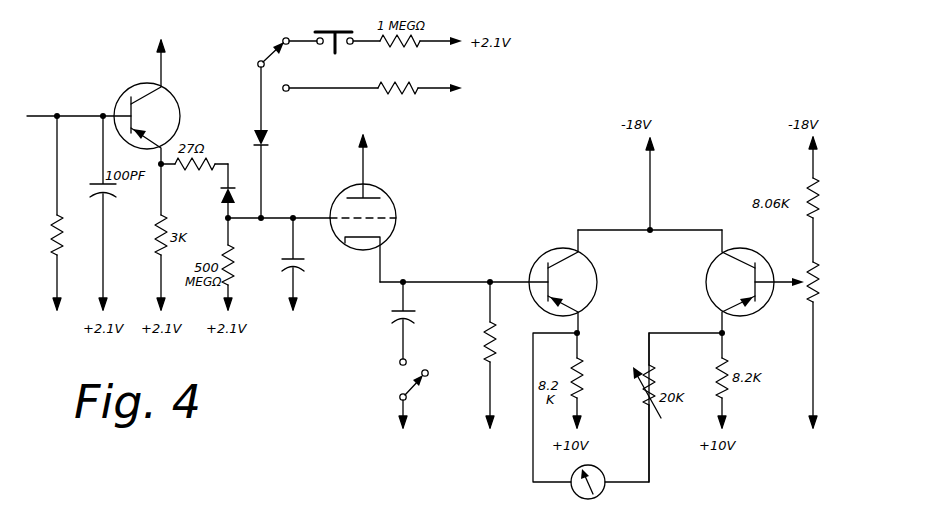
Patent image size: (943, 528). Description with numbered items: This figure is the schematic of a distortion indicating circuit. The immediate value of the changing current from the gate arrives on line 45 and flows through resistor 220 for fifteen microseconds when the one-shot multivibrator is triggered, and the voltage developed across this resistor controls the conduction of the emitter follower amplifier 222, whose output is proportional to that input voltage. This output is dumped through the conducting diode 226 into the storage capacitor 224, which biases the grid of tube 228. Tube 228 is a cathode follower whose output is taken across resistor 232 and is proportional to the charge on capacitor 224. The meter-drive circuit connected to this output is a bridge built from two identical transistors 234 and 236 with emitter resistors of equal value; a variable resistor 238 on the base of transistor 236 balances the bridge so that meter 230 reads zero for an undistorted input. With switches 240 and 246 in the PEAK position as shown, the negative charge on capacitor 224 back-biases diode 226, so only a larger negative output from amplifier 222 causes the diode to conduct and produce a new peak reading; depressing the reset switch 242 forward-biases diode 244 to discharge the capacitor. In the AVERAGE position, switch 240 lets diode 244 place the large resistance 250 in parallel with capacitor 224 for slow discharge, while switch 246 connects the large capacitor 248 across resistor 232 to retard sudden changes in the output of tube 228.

The line 45 is at (41, 116).
The emitter follower amplifier 222 is at (129, 82).
The resistor 220 is at (63, 256).
The diode 226 is at (228, 195).
The storage capacitor 224 is at (288, 258).
The switch 240 is at (258, 57).
The reset switch 242 is at (341, 30).
The diode 244 is at (269, 135).
The resistance 250 is at (411, 95).
The tube 228 is at (385, 196).
The capacitor 248 is at (396, 312).
The resistor 232 is at (487, 329).
The transistor 234 is at (553, 252).
The transistor 236 is at (757, 251).
The variable resistor 238 is at (804, 302).
The switch 246 is at (412, 392).
The meter 230 is at (605, 492).